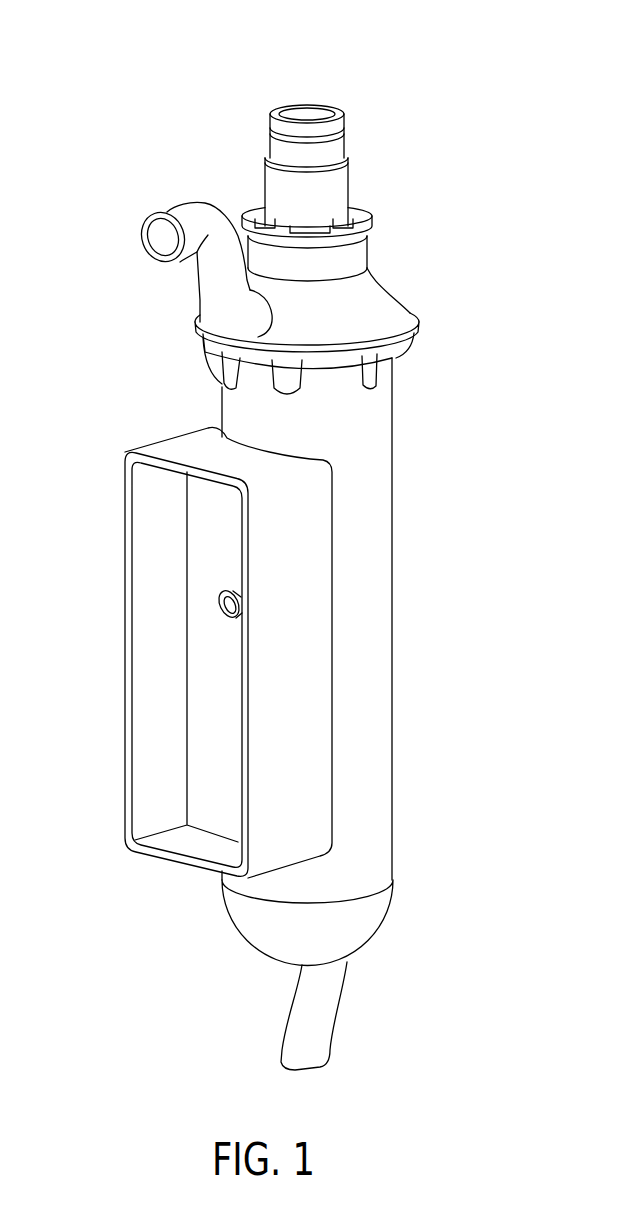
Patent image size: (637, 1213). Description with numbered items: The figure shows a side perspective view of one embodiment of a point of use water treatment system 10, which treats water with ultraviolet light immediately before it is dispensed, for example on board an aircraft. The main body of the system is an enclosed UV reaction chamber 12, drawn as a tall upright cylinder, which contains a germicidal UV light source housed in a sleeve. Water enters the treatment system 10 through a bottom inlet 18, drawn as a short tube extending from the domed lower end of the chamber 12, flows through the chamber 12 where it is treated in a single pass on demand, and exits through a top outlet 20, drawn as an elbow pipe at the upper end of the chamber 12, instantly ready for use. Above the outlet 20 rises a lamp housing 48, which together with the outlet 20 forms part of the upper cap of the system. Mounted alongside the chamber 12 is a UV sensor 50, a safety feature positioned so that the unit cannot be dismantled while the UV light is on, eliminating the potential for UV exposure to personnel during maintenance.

The point of use water treatment system 10 is at (176, 92).
The UV reaction chamber 12 is at (393, 593).
The bottom inlet 18 is at (333, 1048).
The top outlet 20 is at (201, 204).
The lamp housing 48 is at (348, 178).
The UV sensor 50 is at (220, 607).